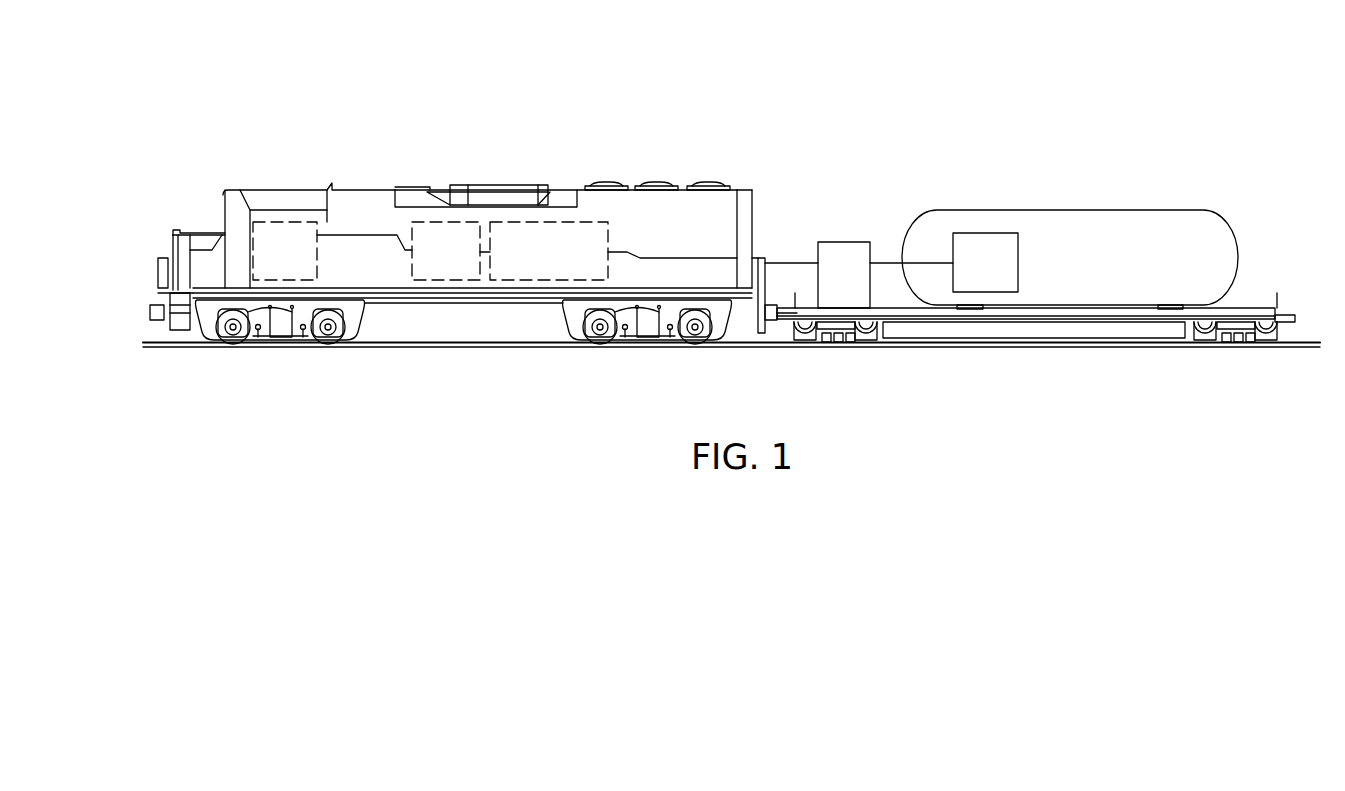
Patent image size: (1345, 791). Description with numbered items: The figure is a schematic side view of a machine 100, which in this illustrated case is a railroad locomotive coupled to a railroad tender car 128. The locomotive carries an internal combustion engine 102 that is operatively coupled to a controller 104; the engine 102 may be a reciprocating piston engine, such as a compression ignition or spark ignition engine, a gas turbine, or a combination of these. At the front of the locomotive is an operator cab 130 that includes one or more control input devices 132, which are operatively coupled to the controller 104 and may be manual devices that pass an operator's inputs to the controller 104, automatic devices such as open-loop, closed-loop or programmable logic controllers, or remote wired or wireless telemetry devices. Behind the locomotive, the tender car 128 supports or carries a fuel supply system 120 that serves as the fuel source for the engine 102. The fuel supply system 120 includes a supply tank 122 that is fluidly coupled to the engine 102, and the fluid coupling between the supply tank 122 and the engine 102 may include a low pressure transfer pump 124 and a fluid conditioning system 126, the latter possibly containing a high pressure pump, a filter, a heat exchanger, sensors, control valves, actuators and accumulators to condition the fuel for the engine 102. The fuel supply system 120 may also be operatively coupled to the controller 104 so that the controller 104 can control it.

The machine 100 is at (963, 62).
The internal combustion engine 102 is at (537, 265).
The controller 104 is at (434, 265).
The fuel supply system 120 is at (1102, 172).
The supply tank 122 is at (1228, 221).
The low pressure transfer pump 124 is at (1003, 275).
The fluid conditioning system 126 is at (844, 241).
The railroad tender car 128 is at (1090, 338).
The operator cab 130 is at (210, 180).
The control input devices 132 is at (273, 265).